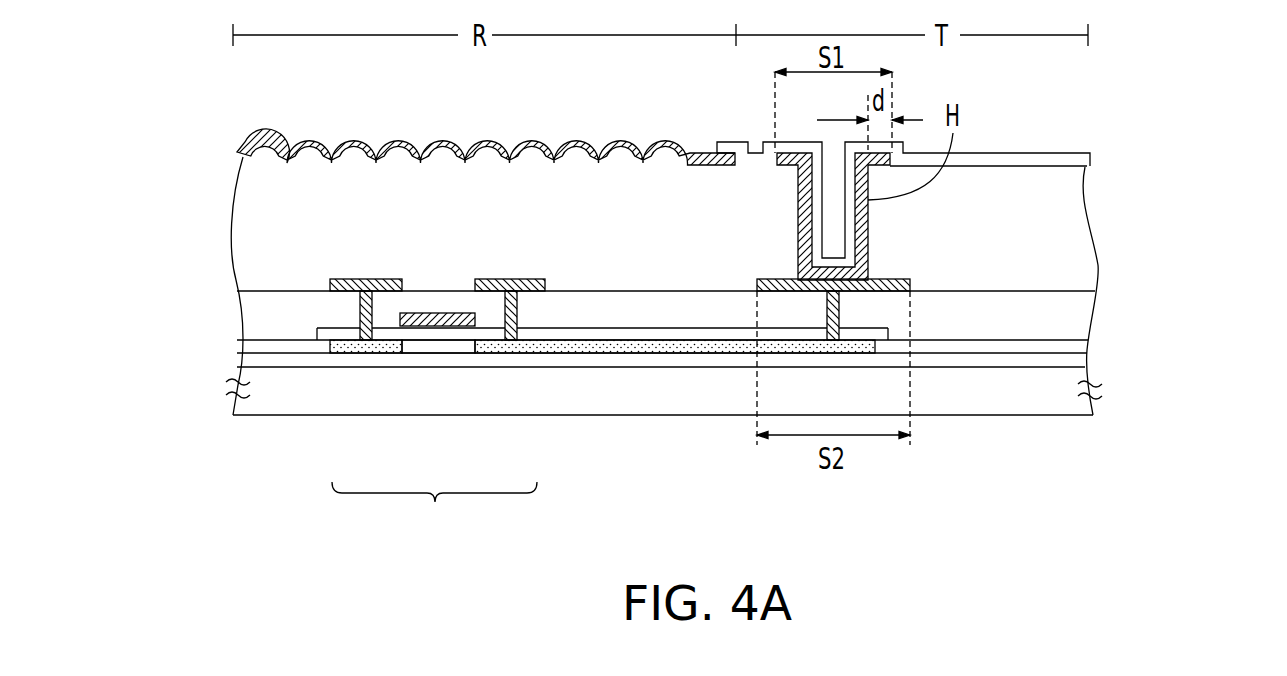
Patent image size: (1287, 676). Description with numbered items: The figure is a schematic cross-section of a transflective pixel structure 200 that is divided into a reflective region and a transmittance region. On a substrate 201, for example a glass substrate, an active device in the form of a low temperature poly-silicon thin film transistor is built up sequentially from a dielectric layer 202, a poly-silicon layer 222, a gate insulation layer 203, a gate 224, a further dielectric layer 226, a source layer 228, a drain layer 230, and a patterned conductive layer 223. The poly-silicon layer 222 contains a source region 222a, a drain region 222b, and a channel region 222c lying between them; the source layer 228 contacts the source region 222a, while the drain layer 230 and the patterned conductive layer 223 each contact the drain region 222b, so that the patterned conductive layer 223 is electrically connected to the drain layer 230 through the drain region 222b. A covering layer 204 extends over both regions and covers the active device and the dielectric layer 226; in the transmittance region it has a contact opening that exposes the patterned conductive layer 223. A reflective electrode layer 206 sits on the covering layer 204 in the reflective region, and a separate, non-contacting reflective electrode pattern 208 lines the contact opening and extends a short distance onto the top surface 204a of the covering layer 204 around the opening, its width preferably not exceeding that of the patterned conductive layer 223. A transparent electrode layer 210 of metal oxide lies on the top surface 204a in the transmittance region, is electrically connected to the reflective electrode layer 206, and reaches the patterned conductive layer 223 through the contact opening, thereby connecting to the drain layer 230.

The transflective pixel structure 200 is at (1240, 504).
The substrate 201 is at (1057, 403).
The dielectric layer 202 is at (1078, 358).
The gate insulation layer 203 is at (1075, 347).
The covering layer 204 is at (1073, 217).
The top surface of the covering layer 204a is at (1052, 163).
The reflective electrode layer 206 is at (242, 150).
The reflective electrode pattern 208 is at (790, 150).
The transparent electrode layer 210 is at (1033, 153).
The poly-silicon layer 222 is at (434, 514).
The source region 222a is at (367, 350).
The drain region 222b is at (508, 353).
The channel region 222c is at (440, 348).
The patterned conductive layer 223 is at (910, 287).
The gate 224 is at (440, 313).
The dielectric layer 226 is at (1075, 303).
The source layer 228 is at (367, 292).
The drain layer 230 is at (512, 280).